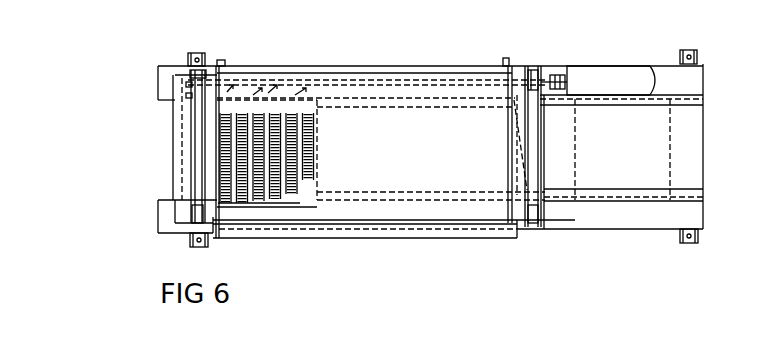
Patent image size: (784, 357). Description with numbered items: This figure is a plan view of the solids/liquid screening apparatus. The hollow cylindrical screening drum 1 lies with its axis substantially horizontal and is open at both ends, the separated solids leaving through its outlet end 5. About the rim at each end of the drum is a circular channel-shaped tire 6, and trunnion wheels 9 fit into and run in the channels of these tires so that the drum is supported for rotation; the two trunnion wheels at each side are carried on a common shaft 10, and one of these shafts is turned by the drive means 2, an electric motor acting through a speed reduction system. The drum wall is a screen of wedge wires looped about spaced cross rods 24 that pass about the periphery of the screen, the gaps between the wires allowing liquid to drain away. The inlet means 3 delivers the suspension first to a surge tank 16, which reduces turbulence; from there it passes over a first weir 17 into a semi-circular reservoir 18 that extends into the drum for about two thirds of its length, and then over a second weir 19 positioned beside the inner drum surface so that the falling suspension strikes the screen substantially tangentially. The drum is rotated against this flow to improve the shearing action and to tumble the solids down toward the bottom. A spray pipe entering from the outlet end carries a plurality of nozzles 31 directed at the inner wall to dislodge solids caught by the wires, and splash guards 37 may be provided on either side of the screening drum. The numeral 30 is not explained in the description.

The screening drum 1 is at (388, 82).
The drive means 2 is at (572, 56).
The inlet means 3 is at (708, 130).
The outlet end 5 is at (175, 136).
The tire 6 is at (198, 152).
The trunnion wheels 9 is at (190, 74).
The common shaft 10 is at (340, 82).
The surge tank 16 is at (662, 167).
The first weir 17 is at (547, 128).
The semi-circular reservoir 18 is at (435, 113).
The second weir 19 is at (390, 202).
The cross rods 24 is at (253, 113).
The feed elements 30 is at (290, 90).
The nozzles 31 is at (228, 90).
The splash guards 37 is at (297, 240).